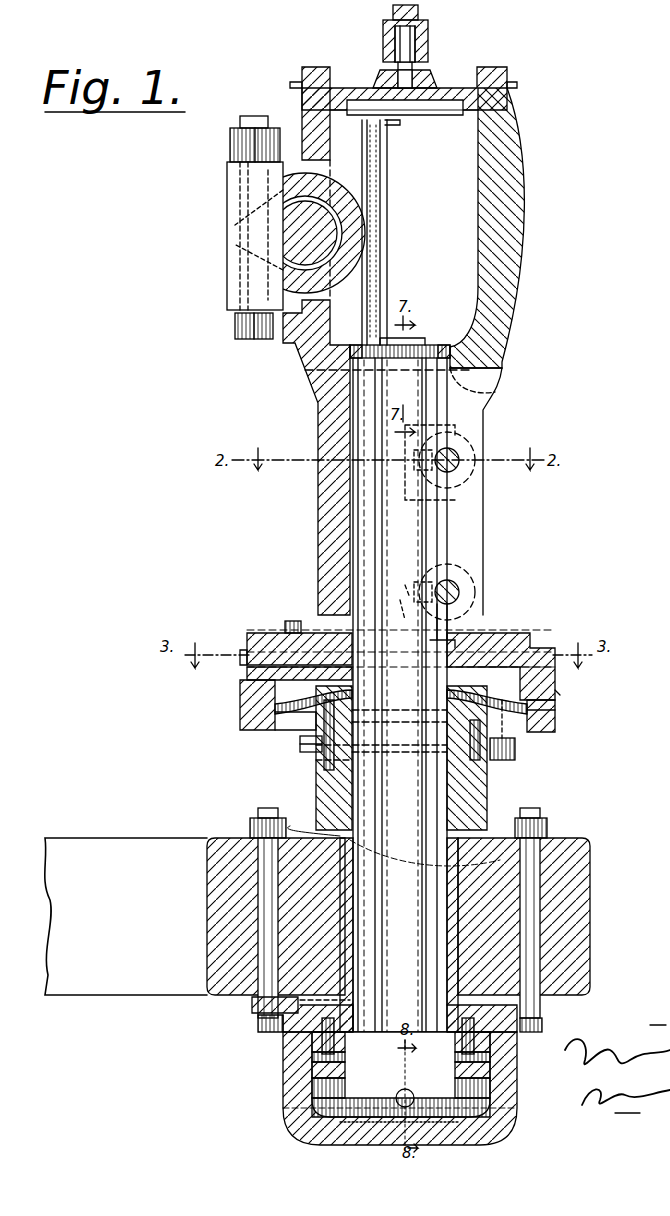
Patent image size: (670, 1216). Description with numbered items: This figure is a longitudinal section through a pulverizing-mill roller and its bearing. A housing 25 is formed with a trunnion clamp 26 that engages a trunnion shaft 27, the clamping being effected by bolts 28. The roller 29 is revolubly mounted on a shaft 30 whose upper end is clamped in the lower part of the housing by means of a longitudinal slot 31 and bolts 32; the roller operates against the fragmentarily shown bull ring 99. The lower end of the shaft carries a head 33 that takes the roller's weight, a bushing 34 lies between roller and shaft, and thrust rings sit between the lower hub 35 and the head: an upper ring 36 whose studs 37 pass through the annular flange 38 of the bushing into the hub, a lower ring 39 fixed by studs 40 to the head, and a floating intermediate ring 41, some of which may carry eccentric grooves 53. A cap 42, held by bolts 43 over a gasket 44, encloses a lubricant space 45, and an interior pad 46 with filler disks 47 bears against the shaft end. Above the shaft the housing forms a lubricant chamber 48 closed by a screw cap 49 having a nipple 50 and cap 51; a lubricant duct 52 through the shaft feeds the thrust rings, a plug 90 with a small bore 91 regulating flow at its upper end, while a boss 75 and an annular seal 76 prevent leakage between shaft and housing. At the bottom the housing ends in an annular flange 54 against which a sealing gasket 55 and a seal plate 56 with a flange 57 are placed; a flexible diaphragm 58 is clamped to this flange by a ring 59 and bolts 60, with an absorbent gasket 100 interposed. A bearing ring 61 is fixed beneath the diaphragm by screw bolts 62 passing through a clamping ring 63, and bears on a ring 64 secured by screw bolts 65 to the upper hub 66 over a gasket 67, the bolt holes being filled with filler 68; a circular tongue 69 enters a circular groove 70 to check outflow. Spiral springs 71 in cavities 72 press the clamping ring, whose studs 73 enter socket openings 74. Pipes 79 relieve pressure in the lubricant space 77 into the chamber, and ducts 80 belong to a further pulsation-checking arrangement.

The housing 25 is at (505, 218).
The trunnion clamp 26 is at (263, 262).
The trunnion shaft 27 is at (300, 233).
The bolts 28 is at (250, 330).
The roller 29 is at (212, 880).
The shaft 30 is at (445, 526).
The longitudinal slot 31 is at (470, 392).
The bolts 32 is at (457, 456).
The head 33 is at (310, 1130).
The bushing 34 is at (560, 845).
The lower hub 35 is at (312, 1040).
The upper ring 36 is at (312, 1057).
The studs 37 is at (270, 1022).
The annular flange 38 is at (495, 1088).
The lower ring 39 is at (312, 1088).
The studs 40 is at (490, 1125).
The intermediate ring 41 is at (312, 1070).
The cap 42 is at (500, 1115).
The bolts 43 is at (260, 920).
The gasket 44 is at (252, 1005).
The lubricant space 45 is at (490, 1045).
The interior pad 46 is at (392, 1120).
The filler disks 47 is at (418, 1120).
The lubricant chamber 48 is at (440, 180).
The screw cap 49 is at (436, 86).
The nipple 50 is at (412, 66).
The cap 51 is at (393, 40).
The lubricant duct 52 is at (548, 826).
The eccentric grooves 53 is at (330, 1105).
The annular flange 54 is at (278, 632).
The sealing gasket 55 is at (252, 645).
The seal plate 56 is at (247, 673).
The flange 57 is at (285, 706).
The flexible diaphragm 58 is at (500, 668).
The ring 59 is at (240, 728).
The bolts 60 is at (292, 620).
The bearing ring 61 is at (399, 712).
The screw bolts 62 is at (556, 720).
The clamping ring 63 is at (452, 660).
The ring 64 is at (316, 735).
The screw bolts 65 is at (330, 755).
The upper hub 66 is at (323, 800).
The gasket 67 is at (322, 748).
The filler 68 is at (470, 740).
The circular tongue 69 is at (262, 728).
The circular groove 70 is at (520, 730).
The spiral springs 71 is at (399, 739).
The cavities 72 is at (397, 602).
The studs 73 is at (462, 620).
The socket openings 74 is at (460, 600).
The boss 75 is at (432, 345).
The annular seal 76 is at (470, 356).
The lubricant space 77 is at (556, 678).
The pipes 79 is at (388, 228).
The ducts 80 is at (415, 1098).
The plug 90 is at (492, 368).
The small bore 91 is at (320, 373).
The bull ring 99 is at (95, 912).
The gasket 100 is at (556, 694).